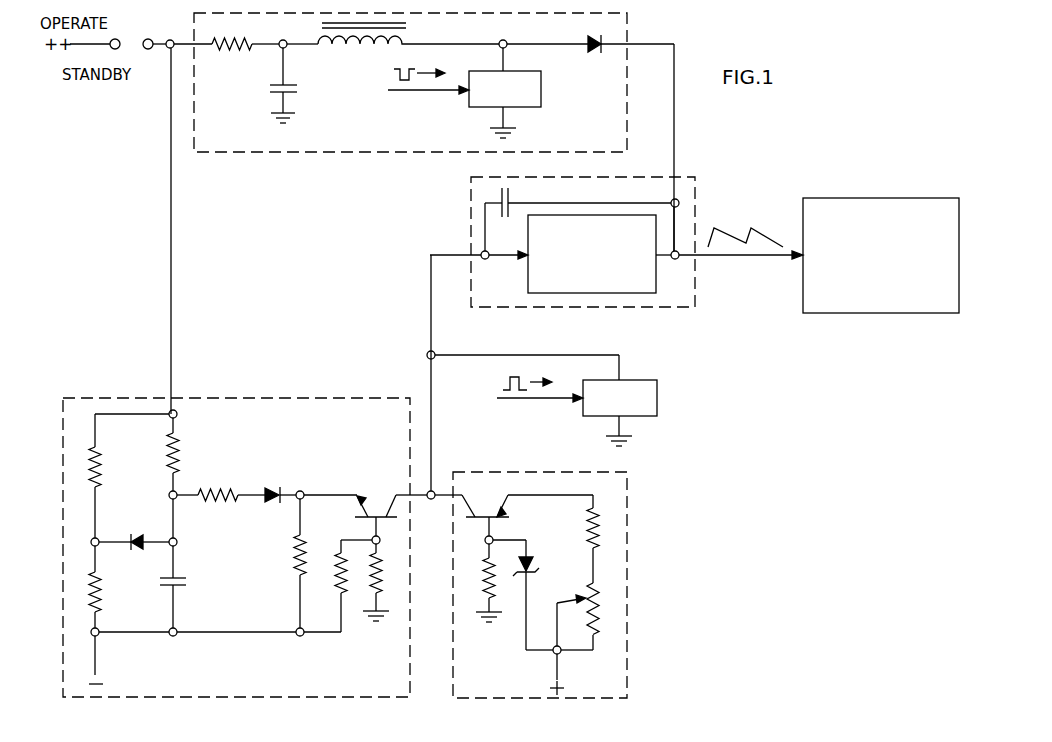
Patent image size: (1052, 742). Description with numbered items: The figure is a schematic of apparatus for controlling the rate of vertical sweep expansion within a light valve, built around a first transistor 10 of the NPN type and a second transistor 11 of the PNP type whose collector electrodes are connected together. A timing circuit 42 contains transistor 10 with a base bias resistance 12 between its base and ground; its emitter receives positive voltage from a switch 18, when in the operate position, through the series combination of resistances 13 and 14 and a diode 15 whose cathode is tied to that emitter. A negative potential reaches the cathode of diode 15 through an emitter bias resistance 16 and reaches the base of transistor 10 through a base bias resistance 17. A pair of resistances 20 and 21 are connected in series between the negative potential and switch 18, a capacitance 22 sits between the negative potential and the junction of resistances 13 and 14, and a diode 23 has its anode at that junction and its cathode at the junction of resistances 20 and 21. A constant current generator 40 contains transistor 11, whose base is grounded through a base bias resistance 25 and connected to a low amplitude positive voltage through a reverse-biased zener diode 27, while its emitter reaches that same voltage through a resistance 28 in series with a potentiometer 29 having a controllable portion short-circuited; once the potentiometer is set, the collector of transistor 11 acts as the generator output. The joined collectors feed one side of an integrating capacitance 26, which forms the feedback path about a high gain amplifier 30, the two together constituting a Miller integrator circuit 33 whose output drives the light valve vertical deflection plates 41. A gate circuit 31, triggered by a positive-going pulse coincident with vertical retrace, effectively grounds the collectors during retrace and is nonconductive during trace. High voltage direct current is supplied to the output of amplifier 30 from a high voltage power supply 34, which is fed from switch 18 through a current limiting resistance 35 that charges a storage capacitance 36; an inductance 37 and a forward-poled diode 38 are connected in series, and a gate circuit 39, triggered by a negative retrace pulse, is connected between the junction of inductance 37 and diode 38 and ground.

The first transistor 10 is at (376, 508).
The second transistor 11 is at (489, 510).
The base bias resistance 12 is at (383, 570).
The resistance 13 is at (183, 445).
The resistance 14 is at (210, 488).
The diode 15 is at (272, 488).
The emitter bias resistance 16 is at (294, 548).
The base bias resistance 17 is at (334, 566).
The switch 18 is at (127, 57).
The resistance 20 is at (103, 471).
The resistance 21 is at (104, 596).
The capacitance 22 is at (190, 580).
The diode 23 is at (135, 536).
The base bias resistance 25 is at (483, 572).
The integrating capacitance 26 is at (514, 197).
The zener diode 27 is at (535, 563).
The resistance 28 is at (588, 526).
The potentiometer 29 is at (589, 592).
The high gain amplifier 30 is at (528, 272).
The gate circuit 31 is at (658, 388).
The Miller integrator circuit 33 is at (470, 213).
The high voltage power supply 34 is at (349, 153).
The current limiting resistance 35 is at (235, 50).
The storage capacitance 36 is at (270, 88).
The inductance 37 is at (350, 50).
The diode 38 is at (598, 53).
The gate circuit 39 is at (541, 97).
The constant current generator 40 is at (628, 522).
The light valve vertical deflection plates 41 is at (880, 198).
The timing circuit 42 is at (292, 398).